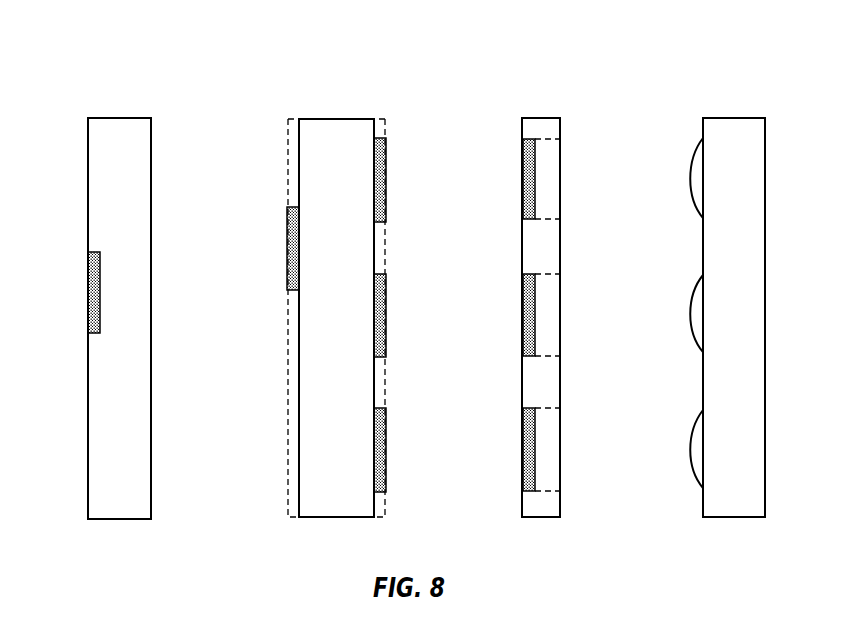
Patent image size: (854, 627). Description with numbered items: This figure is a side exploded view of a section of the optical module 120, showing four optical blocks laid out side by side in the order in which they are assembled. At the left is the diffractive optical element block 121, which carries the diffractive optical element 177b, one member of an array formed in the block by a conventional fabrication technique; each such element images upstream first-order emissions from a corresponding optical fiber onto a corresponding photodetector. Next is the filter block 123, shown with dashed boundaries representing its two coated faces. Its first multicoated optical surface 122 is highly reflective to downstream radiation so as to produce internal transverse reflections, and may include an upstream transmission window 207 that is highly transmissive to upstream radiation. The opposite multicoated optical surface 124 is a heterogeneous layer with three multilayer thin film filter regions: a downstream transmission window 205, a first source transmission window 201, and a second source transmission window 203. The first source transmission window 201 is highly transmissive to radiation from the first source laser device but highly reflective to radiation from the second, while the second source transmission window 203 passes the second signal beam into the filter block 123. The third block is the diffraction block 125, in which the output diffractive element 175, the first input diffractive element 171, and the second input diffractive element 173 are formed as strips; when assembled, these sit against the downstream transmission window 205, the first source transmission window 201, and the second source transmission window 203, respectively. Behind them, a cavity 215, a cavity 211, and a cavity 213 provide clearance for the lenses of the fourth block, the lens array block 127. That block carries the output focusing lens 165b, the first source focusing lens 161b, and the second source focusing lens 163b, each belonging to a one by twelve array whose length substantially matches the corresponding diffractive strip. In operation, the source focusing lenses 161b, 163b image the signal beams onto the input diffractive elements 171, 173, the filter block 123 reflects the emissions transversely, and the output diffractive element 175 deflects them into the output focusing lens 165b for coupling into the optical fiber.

The optical module 120 is at (148, 40).
The diffractive optical element block 121 is at (117, 117).
The first multicoated optical surface 122 is at (287, 160).
The filter block 123 is at (337, 118).
The multicoated optical surface 124 is at (386, 238).
The diffraction block 125 is at (543, 117).
The lens array block 127 is at (735, 117).
The diffractive optical element 177b is at (90, 250).
The upstream transmission window 207 is at (287, 252).
The downstream transmission window 205 is at (386, 178).
The first source transmission window 201 is at (386, 313).
The second source transmission window 203 is at (386, 448).
The cavity 215 is at (547, 178).
The cavity 211 is at (547, 313).
The cavity 213 is at (547, 448).
The output diffractive element 175 is at (522, 178).
The first input diffractive element 171 is at (522, 315).
The second input diffractive element 173 is at (522, 450).
The output focusing lens 165b is at (690, 178).
The first source focusing lens 161b is at (690, 314).
The second source focusing lens 163b is at (690, 448).